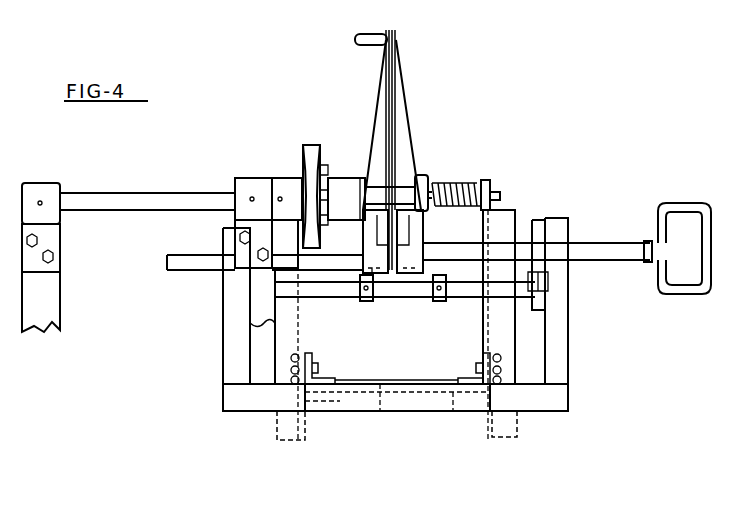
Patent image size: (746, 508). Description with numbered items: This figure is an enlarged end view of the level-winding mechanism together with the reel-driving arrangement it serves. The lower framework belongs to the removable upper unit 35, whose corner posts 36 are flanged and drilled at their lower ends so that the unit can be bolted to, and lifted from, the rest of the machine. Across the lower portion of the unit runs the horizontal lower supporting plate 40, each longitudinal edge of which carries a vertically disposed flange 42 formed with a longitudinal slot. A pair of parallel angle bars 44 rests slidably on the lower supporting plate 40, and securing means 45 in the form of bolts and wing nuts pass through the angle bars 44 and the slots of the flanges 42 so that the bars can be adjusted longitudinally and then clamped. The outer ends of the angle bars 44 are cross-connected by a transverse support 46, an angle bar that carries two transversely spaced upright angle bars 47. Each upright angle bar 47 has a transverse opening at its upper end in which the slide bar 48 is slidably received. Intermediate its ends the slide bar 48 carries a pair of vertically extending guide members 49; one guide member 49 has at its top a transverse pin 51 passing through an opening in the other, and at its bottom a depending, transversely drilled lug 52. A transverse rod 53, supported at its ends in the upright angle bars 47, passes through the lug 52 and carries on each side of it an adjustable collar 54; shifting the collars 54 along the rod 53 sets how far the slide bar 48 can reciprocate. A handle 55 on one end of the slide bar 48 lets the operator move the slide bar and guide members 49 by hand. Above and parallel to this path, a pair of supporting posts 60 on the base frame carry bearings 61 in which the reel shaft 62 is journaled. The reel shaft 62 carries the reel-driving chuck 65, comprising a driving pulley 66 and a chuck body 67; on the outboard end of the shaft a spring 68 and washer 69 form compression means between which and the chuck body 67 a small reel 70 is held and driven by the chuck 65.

The upper unit 35 is at (303, 452).
The corner post 36 is at (280, 428).
The lower supporting plate 40 is at (380, 411).
The flange 42 is at (316, 354).
The angle bar 44 is at (456, 377).
The securing means 45 is at (305, 388).
The transverse support 46 is at (456, 411).
The upright angle bar 47 is at (222, 350).
The slide bar 48 is at (182, 270).
The guide member 49 is at (390, 34).
The transverse pin 51 is at (360, 36).
The lug 52 is at (400, 276).
The transverse rod 53 is at (330, 286).
The adjustable collar 54 is at (368, 301).
The handle 55 is at (692, 294).
The supporting post 60 is at (50, 312).
The bearing 61 is at (38, 190).
The reel shaft 62 is at (190, 196).
The reel-driving chuck 65 is at (324, 136).
The driving pulley 66 is at (304, 160).
The chuck body 67 is at (348, 178).
The spring 68 is at (490, 186).
The washer 69 is at (448, 183).
The small reel 70 is at (410, 186).